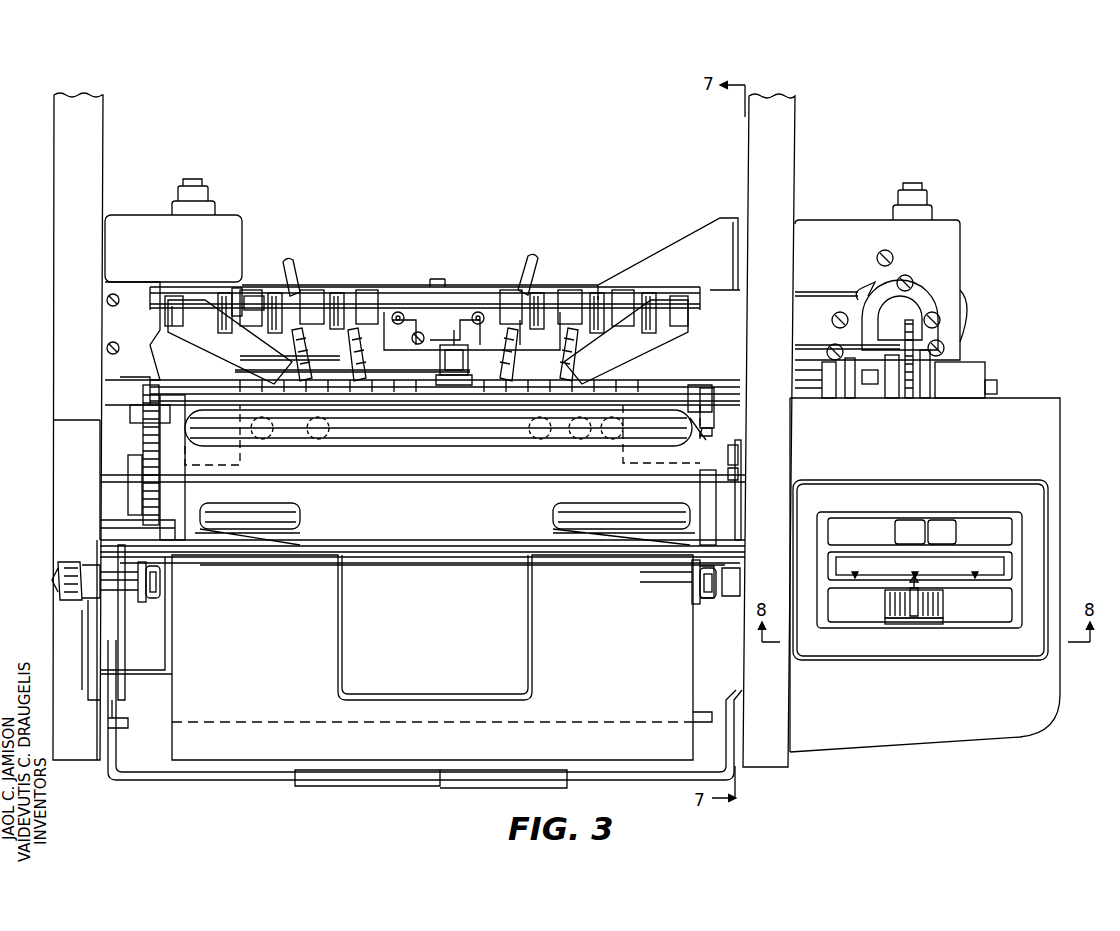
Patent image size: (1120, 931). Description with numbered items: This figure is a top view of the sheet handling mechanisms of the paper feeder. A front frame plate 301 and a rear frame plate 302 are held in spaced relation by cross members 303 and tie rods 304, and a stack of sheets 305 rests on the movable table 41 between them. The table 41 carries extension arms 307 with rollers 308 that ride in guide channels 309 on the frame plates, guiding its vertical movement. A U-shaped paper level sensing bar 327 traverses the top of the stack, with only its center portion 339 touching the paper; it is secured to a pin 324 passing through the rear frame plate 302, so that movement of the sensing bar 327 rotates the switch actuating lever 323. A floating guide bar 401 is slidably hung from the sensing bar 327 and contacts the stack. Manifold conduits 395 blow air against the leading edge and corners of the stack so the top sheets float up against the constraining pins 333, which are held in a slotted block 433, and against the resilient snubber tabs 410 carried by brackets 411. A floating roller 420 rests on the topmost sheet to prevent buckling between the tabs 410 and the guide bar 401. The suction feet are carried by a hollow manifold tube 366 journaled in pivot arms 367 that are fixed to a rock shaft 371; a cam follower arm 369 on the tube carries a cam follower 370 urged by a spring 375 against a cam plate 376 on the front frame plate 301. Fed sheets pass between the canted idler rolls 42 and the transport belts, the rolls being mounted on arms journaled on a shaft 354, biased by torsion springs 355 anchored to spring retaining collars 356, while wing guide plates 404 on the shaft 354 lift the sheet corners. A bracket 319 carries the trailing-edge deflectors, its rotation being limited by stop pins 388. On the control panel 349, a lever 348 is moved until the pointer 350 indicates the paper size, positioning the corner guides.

The front frame plate 301 is at (103, 130).
The rear frame plate 302 is at (795, 133).
The cross member 303 is at (660, 261).
The tie rod 304 is at (296, 512).
The stack of sheets 305 is at (203, 772).
The extension arm 307 is at (160, 582).
The roller 308 is at (155, 598).
The guide channel 309 is at (137, 590).
The bracket 319 is at (282, 778).
The switch actuating lever 323 is at (740, 480).
The pin 324 is at (738, 455).
The paper level sensing bar 327 is at (536, 612).
The constraining pin 333 is at (714, 410).
The center portion of the sensing bar 339 is at (398, 694).
The lever 348 is at (885, 610).
The control panel 349 is at (1050, 572).
The pointer 350 is at (920, 586).
The shaft 354 is at (248, 286).
The torsion spring 355 is at (250, 298).
The spring retaining collar 356 is at (306, 278).
The hollow manifold tube 366 is at (440, 450).
The pivot arm 367 is at (200, 458).
The cam follower arm 369 is at (130, 448).
The cam follower 370 is at (120, 504).
The rock shaft 371 is at (210, 552).
The spring 375 is at (160, 500).
The cam plate 376 is at (128, 476).
The stop pin 388 is at (128, 728).
The manifold conduit 395 is at (712, 426).
The floating guide bar 401 is at (340, 534).
The wing guide plate 404 is at (185, 295).
The snubber tab 410 is at (421, 426).
The bracket 411 is at (629, 426).
The floating roller 420 is at (488, 481).
The slotted block 433 is at (700, 382).
The movable table 41 is at (630, 722).
The idler roll 42 is at (340, 391).